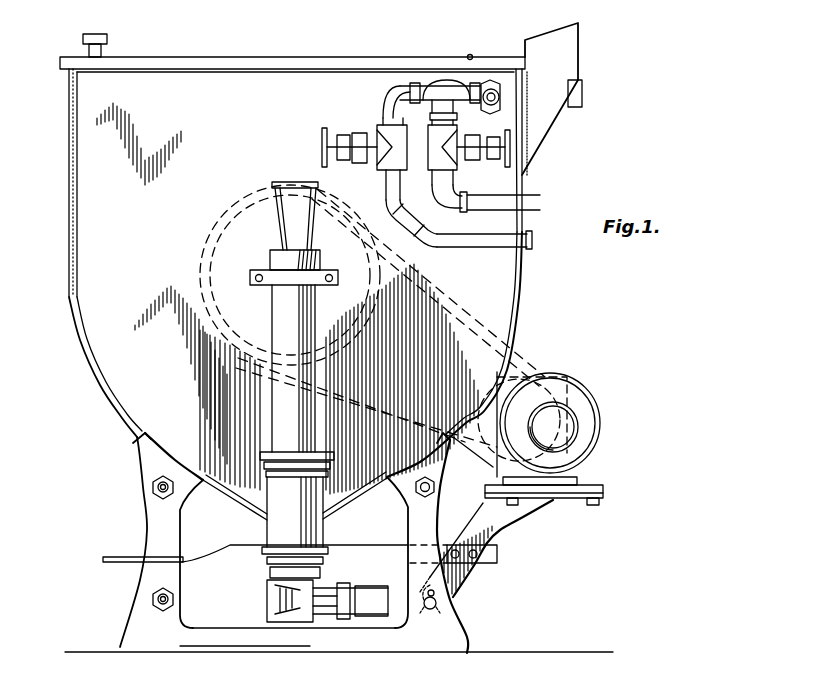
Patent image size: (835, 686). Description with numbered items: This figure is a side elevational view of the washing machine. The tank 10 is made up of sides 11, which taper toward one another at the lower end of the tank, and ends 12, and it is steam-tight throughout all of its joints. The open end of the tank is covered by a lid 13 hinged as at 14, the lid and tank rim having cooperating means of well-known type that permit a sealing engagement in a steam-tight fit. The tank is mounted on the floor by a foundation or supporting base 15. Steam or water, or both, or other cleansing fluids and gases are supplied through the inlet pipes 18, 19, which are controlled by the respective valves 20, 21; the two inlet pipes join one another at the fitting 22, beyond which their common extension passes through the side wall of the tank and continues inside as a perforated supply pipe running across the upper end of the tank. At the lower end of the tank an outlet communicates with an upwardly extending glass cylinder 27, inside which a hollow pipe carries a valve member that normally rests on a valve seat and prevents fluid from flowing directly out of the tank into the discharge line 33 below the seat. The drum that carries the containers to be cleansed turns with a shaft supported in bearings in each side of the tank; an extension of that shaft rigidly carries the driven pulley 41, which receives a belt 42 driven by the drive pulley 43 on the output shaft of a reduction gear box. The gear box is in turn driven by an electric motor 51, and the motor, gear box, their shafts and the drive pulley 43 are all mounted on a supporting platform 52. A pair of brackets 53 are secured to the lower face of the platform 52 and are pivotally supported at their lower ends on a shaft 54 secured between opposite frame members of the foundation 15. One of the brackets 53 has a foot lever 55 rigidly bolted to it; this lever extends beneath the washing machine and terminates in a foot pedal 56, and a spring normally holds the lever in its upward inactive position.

The tank 10 is at (486, 268).
The sides 11 is at (68, 297).
The ends 12 is at (69, 191).
The lid 13 is at (247, 64).
The hinge 14 is at (471, 55).
The supporting base 15 is at (160, 518).
The inlet pipe 18 is at (524, 200).
The inlet pipe 19 is at (530, 238).
The valve 20 is at (433, 167).
The valve 21 is at (360, 140).
The fitting 22 is at (437, 88).
The glass cylinder 27 is at (287, 408).
The discharge line 33 is at (376, 600).
The driven pulley 41 is at (212, 236).
The belt 42 is at (500, 377).
The drive pulley 43 is at (510, 380).
The electric motor 51 is at (590, 432).
The supporting platform 52 is at (580, 499).
The brackets 53 is at (497, 522).
The shaft 54 is at (437, 603).
The foot lever 55 is at (243, 553).
The foot pedal 56 is at (125, 562).